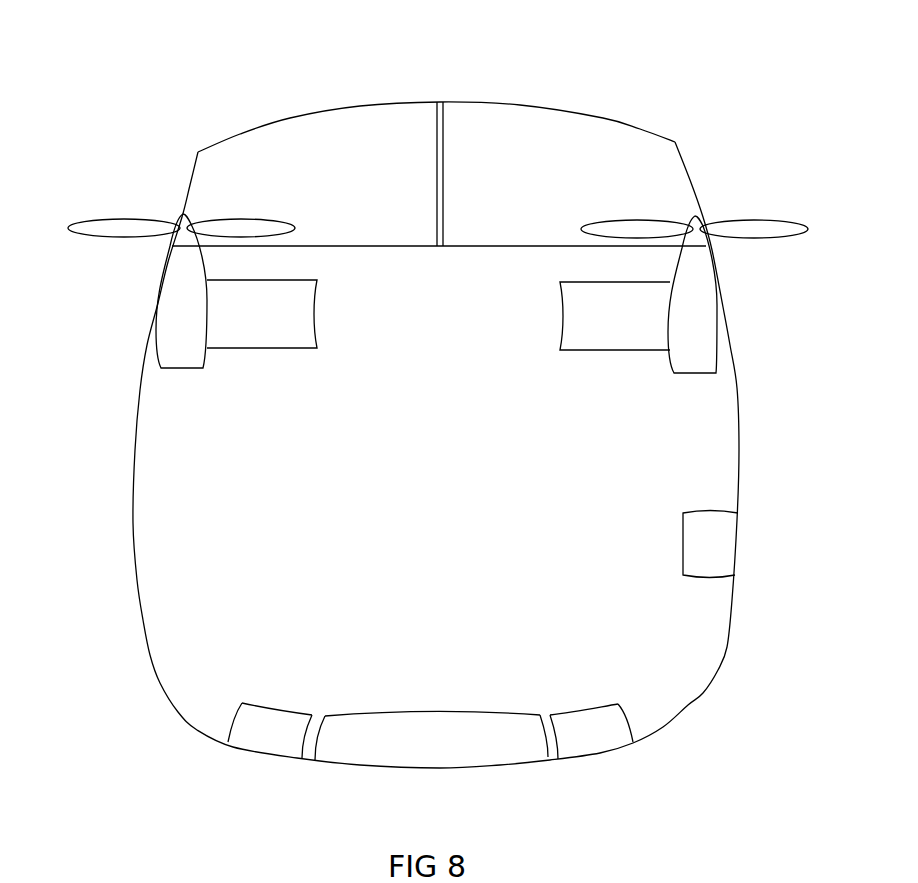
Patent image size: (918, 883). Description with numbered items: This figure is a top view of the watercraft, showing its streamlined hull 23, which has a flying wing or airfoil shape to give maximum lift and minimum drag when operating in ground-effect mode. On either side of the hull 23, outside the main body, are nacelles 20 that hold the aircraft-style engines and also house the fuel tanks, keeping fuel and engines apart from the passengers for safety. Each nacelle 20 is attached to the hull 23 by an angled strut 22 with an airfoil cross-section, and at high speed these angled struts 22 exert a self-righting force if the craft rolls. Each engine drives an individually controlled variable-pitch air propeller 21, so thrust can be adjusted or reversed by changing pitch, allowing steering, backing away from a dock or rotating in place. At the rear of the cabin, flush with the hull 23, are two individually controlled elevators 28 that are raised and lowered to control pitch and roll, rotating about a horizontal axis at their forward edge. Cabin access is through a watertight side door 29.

The nacelle 20 is at (168, 318).
The variable-pitch air propeller 21 is at (118, 225).
The angled strut 22 is at (288, 293).
The hull 23 is at (170, 455).
The elevator 28 is at (602, 142).
The side door 29 is at (718, 543).